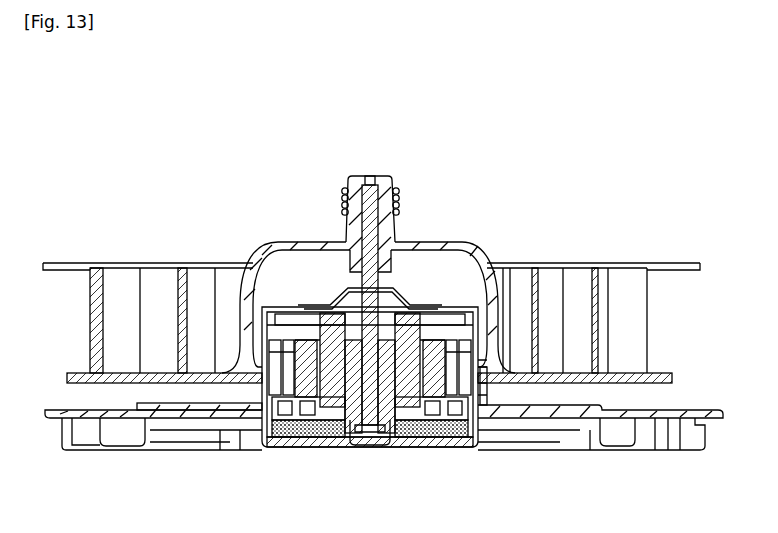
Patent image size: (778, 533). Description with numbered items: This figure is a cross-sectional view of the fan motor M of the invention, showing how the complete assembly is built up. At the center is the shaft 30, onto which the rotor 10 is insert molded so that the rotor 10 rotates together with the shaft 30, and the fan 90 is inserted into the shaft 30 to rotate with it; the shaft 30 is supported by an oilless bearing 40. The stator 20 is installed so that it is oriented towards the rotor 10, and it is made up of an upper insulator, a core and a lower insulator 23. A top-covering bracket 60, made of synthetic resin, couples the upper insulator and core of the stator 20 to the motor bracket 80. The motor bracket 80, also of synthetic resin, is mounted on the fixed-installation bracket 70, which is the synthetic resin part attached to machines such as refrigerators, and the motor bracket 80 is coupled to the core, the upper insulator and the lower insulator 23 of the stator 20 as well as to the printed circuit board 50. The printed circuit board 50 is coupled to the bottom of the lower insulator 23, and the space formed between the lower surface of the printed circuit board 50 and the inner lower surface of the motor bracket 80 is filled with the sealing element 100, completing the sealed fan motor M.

The rotor 10 is at (300, 447).
The stator 20 is at (225, 432).
The lower insulator 23 is at (487, 402).
The shaft 30 is at (399, 210).
The oilless bearing 40 is at (352, 434).
The printed circuit board 50 is at (440, 441).
The top-covering bracket 60 is at (397, 293).
The fixed-installation bracket 70 is at (700, 405).
The motor bracket 80 is at (500, 388).
The fan 90 is at (552, 263).
The sealing element 100 is at (420, 447).
The fan motor M is at (508, 170).